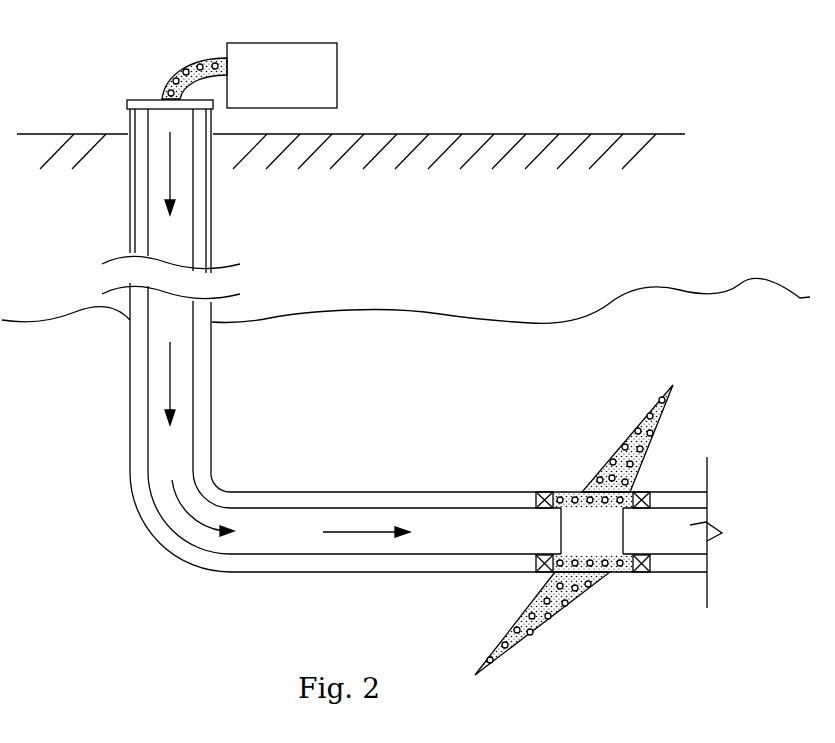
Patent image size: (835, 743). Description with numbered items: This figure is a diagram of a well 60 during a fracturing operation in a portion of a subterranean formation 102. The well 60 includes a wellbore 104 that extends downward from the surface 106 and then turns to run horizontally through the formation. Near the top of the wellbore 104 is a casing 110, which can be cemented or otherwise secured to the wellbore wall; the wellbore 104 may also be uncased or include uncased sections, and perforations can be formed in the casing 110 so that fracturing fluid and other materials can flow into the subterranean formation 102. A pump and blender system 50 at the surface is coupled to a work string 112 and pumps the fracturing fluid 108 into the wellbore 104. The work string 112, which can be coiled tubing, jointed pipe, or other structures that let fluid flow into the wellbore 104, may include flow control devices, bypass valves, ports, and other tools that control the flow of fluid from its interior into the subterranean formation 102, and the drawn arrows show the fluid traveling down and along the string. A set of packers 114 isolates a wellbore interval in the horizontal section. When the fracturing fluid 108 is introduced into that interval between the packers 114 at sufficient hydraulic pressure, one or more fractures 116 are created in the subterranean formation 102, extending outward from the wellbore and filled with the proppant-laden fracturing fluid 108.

The pump and blender system 50 is at (279, 86).
The well 60 is at (137, 565).
The subterranean formation 102 is at (403, 350).
The wellbore 104 is at (139, 212).
The surface 106 is at (510, 134).
The fracturing fluid 108 is at (172, 78).
The casing 110 is at (131, 241).
The work string 112 is at (148, 420).
The packers 114 is at (545, 491).
The fractures 116 is at (612, 441).